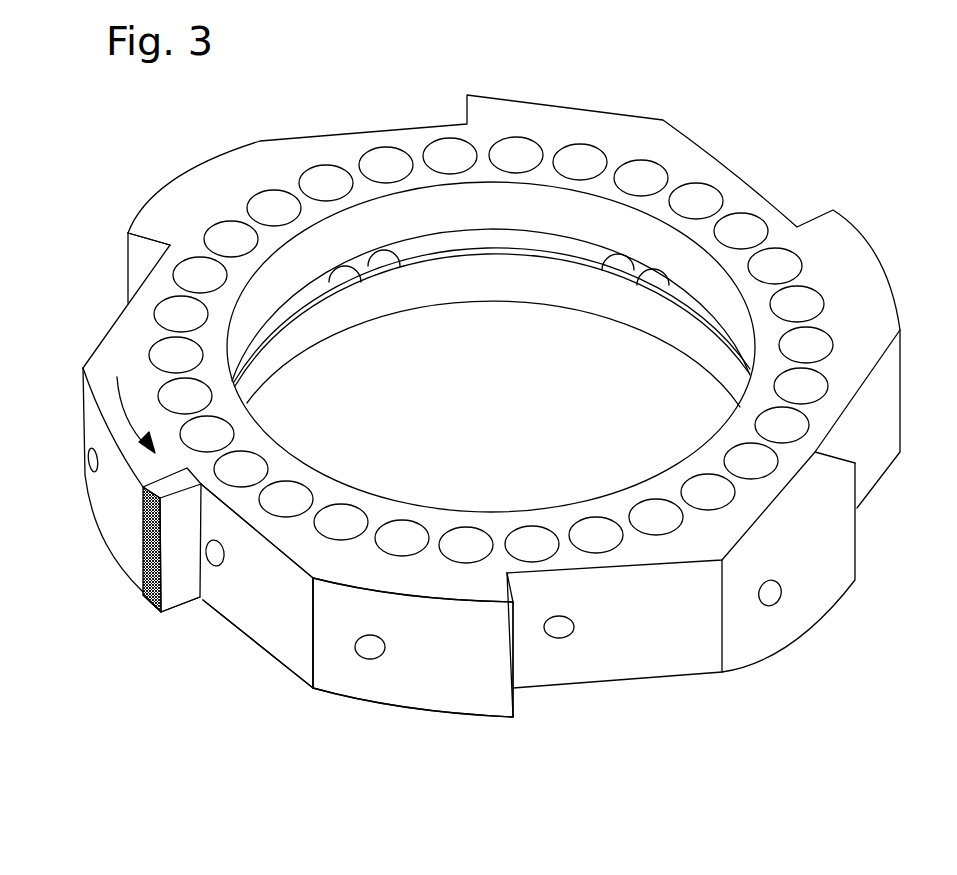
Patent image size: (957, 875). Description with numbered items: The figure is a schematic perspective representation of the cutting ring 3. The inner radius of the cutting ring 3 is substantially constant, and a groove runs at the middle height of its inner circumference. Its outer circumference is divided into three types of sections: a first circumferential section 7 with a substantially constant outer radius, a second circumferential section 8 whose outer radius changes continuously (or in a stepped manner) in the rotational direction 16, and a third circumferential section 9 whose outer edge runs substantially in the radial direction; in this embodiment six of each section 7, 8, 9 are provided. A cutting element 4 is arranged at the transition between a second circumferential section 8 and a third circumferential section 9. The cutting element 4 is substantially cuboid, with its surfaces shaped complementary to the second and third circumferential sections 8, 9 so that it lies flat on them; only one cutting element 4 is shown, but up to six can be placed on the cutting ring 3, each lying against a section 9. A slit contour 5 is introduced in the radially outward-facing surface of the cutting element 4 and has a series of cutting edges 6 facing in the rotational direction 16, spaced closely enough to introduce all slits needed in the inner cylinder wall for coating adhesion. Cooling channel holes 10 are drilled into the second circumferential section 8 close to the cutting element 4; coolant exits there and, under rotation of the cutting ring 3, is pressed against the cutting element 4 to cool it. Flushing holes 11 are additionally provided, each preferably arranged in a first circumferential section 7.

The cutting ring 3 is at (583, 117).
The cutting element 4 is at (182, 580).
The slit contour 5 is at (143, 568).
The cutting edges 6 is at (162, 607).
The first circumferential section 7 is at (445, 685).
The second circumferential section 8 is at (280, 640).
The third circumferential section 9 is at (142, 252).
The cooling channel holes 10 is at (208, 556).
The flushing holes 11 is at (370, 650).
The rotational direction 16 is at (120, 395).